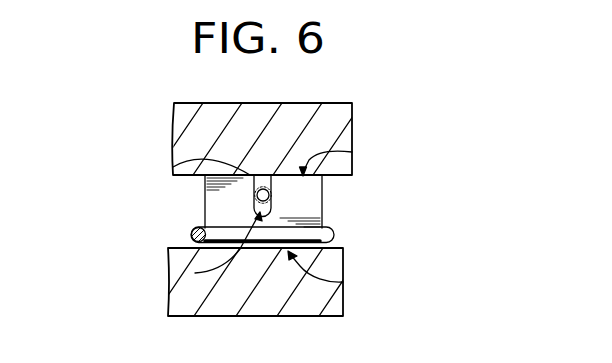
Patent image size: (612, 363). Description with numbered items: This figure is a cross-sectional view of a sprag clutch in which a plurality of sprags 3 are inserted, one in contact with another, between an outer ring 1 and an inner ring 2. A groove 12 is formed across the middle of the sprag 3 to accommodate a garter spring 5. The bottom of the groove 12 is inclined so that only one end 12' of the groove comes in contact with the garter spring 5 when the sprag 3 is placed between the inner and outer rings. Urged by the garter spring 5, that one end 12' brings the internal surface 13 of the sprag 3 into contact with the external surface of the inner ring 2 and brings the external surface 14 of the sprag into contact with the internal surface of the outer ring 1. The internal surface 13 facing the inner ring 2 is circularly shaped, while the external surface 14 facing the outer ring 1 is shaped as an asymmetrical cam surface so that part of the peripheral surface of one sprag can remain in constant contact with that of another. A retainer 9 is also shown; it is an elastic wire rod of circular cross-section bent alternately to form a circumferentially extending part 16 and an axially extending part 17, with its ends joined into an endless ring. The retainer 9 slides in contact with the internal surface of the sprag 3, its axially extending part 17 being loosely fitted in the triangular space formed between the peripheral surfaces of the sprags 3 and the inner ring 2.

The outer ring 1 is at (350, 131).
The inner ring 2 is at (187, 303).
The sprag 3 is at (311, 205).
The garter spring 5 is at (254, 195).
The retainer 9 is at (327, 222).
The groove 12 is at (186, 177).
The end of the groove 12' is at (189, 249).
The internal surface 13 is at (343, 282).
The external surface 14 is at (352, 152).
The circumferentially extending part 16 is at (186, 232).
The axially extending part 17 is at (318, 243).